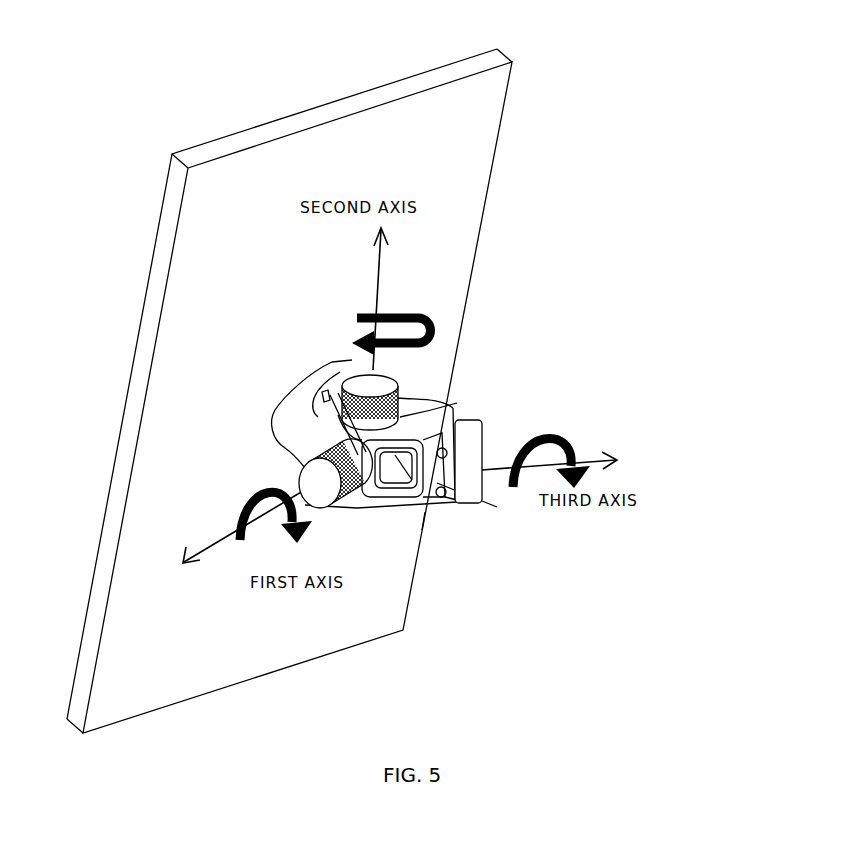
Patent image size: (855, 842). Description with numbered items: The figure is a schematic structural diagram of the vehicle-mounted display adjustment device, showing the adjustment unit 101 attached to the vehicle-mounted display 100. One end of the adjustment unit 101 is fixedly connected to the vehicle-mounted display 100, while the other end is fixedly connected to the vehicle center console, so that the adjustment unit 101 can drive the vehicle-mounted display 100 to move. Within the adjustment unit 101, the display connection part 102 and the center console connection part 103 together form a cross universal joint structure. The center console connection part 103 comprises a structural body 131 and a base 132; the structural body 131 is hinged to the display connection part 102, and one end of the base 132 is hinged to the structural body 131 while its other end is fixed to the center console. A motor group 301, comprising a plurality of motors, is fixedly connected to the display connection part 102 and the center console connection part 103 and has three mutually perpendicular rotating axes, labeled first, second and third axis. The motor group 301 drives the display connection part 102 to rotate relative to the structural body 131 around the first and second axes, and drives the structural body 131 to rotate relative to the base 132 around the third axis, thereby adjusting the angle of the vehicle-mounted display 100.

The vehicle-mounted display 100 is at (494, 91).
The adjustment unit 101 is at (672, 292).
The display connection part 102 is at (357, 372).
The center console connection part 103 is at (606, 335).
The structural body 131 is at (460, 410).
The base 132 is at (489, 462).
The motor group 301 is at (488, 498).